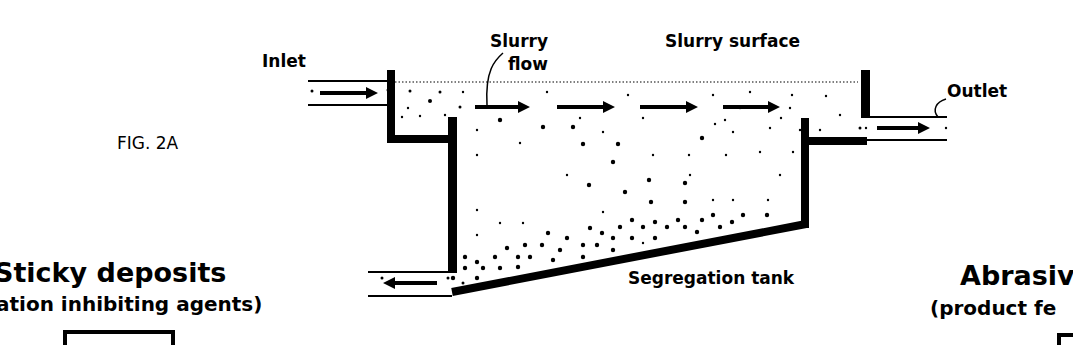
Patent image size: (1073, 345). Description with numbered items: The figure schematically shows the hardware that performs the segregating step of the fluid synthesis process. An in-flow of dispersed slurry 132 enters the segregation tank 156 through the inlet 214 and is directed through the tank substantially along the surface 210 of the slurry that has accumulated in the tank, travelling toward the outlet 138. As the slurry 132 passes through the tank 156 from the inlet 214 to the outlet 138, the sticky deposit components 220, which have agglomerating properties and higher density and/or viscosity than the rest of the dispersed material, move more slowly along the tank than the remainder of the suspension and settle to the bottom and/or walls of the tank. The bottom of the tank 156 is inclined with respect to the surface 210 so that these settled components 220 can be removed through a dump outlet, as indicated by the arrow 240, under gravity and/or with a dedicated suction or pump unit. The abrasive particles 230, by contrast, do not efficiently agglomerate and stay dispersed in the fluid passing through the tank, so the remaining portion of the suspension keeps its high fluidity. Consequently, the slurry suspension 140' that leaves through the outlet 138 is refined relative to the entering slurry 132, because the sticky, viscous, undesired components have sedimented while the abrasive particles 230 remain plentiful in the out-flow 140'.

The dispersed slurry 132 is at (335, 90).
The inlet 214 is at (325, 85).
The surface 210 is at (643, 74).
The out-flow of segregated slurry 140' is at (874, 77).
The outlet 138 is at (967, 108).
The abrasive particles 230 is at (733, 177).
The segregation tank 156 is at (628, 191).
The sticky deposit components 220 is at (598, 247).
The dump outlet flow 240 is at (413, 280).